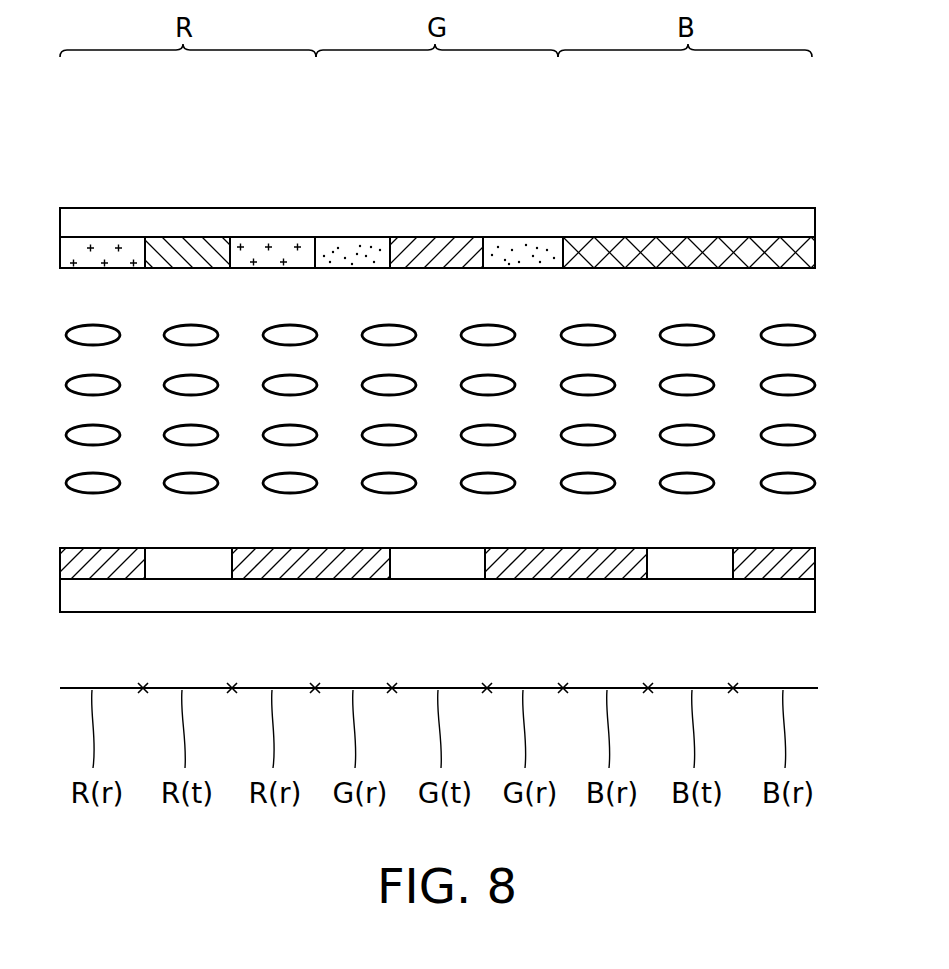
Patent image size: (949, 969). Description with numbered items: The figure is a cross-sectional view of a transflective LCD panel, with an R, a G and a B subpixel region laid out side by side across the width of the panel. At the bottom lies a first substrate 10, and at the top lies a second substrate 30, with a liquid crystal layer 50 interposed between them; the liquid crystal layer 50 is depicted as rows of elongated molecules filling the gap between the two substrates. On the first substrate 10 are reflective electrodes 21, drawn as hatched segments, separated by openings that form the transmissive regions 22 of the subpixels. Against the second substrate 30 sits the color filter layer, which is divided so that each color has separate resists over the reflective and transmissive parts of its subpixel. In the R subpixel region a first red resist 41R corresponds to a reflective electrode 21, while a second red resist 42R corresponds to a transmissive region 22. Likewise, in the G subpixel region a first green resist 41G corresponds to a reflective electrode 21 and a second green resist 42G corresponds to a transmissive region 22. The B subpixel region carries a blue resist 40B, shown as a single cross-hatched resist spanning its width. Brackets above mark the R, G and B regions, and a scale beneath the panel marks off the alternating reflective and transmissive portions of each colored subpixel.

The first substrate 10 is at (798, 590).
The reflective electrode 21 is at (797, 557).
The transmissive region 22 is at (698, 556).
The second substrate 30 is at (797, 217).
The blue resist 40B is at (705, 237).
The first red resist 41R is at (108, 248).
The second red resist 42R is at (185, 248).
The first green resist 41G is at (352, 250).
The second green resist 42G is at (437, 247).
The liquid crystal layer 50 is at (798, 405).